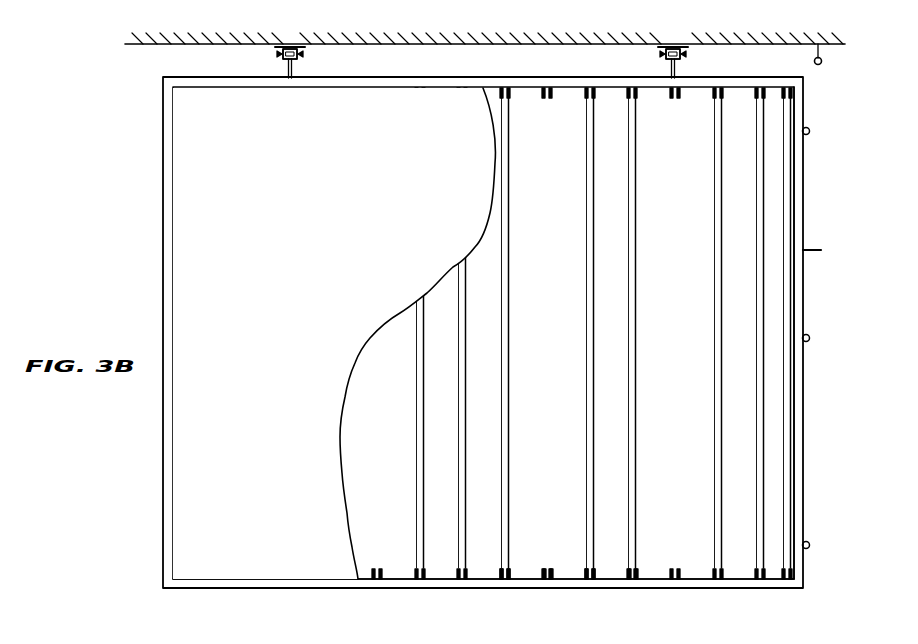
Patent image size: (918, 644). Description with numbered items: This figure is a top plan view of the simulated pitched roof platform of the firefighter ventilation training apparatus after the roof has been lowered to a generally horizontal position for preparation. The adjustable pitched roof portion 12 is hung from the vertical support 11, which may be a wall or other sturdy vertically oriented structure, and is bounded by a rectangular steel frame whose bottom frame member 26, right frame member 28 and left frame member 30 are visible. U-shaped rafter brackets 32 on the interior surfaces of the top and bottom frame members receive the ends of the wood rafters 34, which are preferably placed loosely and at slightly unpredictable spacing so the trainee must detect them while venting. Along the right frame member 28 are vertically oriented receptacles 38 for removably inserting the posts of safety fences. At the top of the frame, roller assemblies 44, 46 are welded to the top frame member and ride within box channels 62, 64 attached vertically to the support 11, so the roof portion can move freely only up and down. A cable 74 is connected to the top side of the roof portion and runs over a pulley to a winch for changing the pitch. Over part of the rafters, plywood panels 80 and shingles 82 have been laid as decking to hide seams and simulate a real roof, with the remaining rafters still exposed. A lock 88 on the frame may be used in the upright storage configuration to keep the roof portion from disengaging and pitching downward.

The vertical support 11 is at (183, 43).
The adjustable pitched roof portion 12 is at (100, 195).
The bottom frame member 26 is at (487, 582).
The right frame member 28 is at (799, 318).
The left frame member 30 is at (167, 185).
The rafter brackets 32 is at (637, 573).
The rafters 34 is at (507, 319).
The receptacles 38 is at (809, 131).
The roller assembly 44 is at (687, 56).
The roller assembly 46 is at (300, 58).
The box channel 62 is at (677, 47).
The box channel 64 is at (292, 47).
The cable 74 is at (497, 88).
The plywood panels 80 is at (363, 215).
The shingles 82 is at (250, 150).
The lock 88 is at (806, 250).